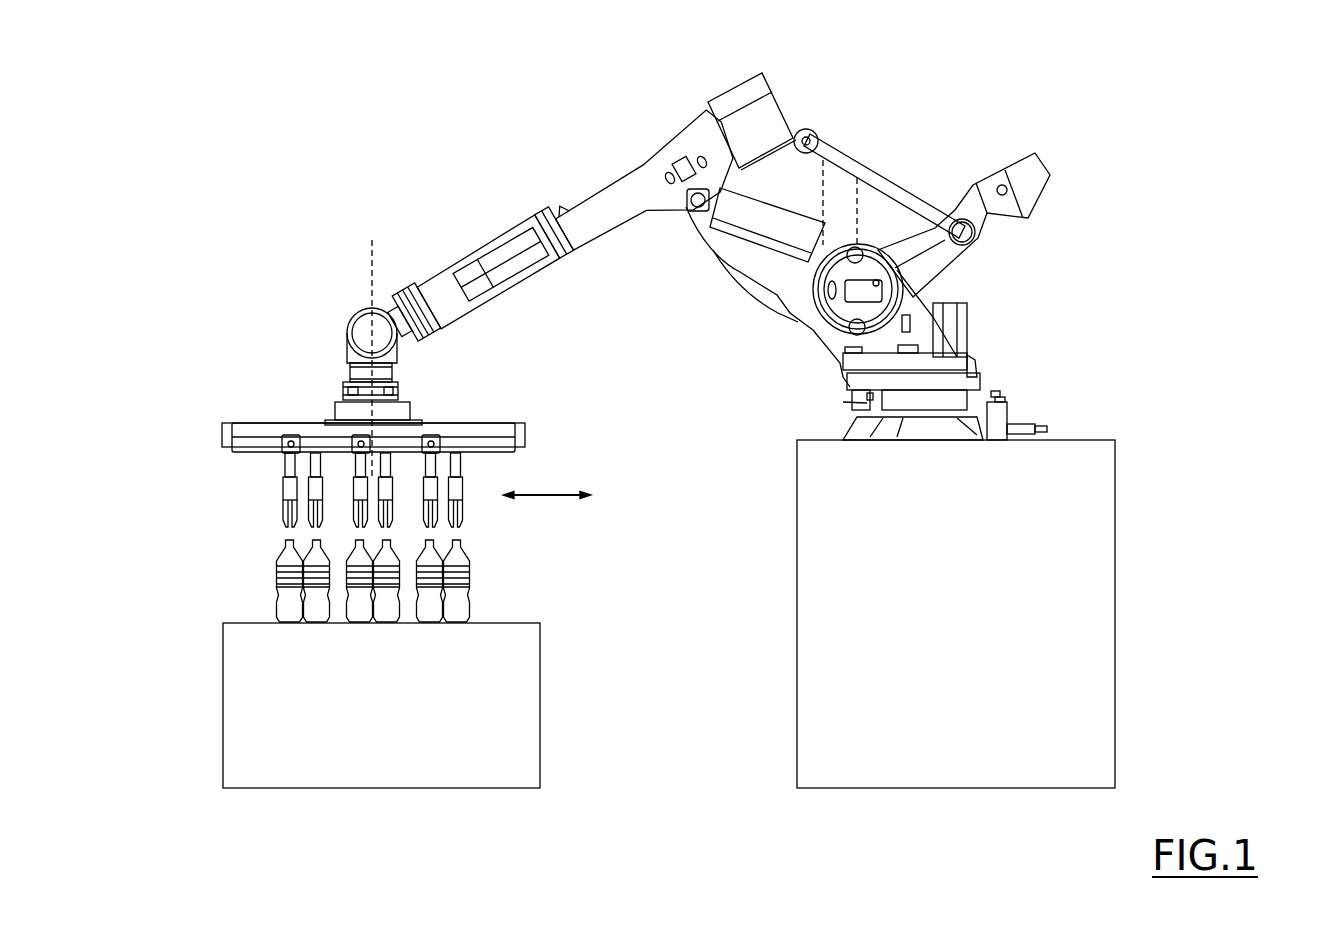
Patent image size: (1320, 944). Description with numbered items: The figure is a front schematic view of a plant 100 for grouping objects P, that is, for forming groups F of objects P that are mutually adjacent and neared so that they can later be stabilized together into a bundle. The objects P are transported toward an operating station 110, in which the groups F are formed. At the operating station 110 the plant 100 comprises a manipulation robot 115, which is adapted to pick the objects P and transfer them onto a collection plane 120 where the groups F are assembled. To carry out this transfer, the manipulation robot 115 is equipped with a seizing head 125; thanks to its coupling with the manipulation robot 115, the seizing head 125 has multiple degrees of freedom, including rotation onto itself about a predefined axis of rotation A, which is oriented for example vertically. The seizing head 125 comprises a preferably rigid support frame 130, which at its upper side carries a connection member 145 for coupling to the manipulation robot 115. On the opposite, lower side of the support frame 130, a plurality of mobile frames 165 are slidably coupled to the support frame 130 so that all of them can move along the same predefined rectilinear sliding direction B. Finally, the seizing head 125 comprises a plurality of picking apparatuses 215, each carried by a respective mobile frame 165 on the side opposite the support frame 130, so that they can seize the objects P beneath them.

The plant 100 is at (1158, 175).
The operating station 110 is at (284, 147).
The manipulation robot 115 is at (866, 131).
The collection plane 120 is at (245, 625).
The seizing head 125 is at (212, 379).
The support frame 130 is at (497, 423).
The connection member 145 is at (340, 378).
The mobile frame 165 is at (282, 457).
The picking apparatus 215 is at (280, 513).
The axis of rotation A is at (370, 273).
The sliding direction B is at (547, 481).
The group of objects F is at (487, 562).
The object P is at (458, 595).